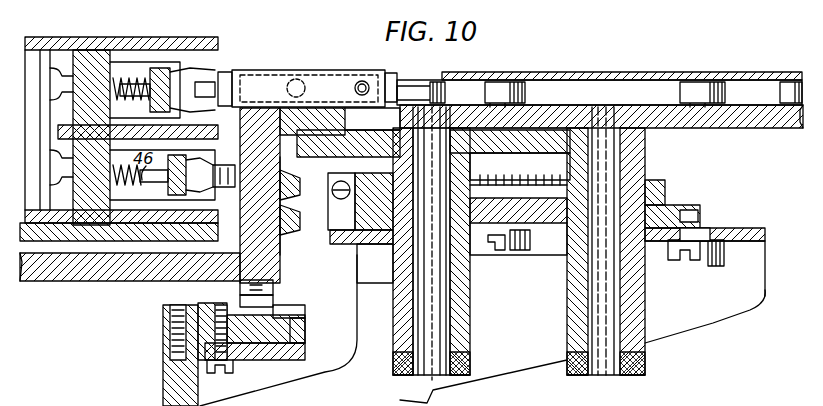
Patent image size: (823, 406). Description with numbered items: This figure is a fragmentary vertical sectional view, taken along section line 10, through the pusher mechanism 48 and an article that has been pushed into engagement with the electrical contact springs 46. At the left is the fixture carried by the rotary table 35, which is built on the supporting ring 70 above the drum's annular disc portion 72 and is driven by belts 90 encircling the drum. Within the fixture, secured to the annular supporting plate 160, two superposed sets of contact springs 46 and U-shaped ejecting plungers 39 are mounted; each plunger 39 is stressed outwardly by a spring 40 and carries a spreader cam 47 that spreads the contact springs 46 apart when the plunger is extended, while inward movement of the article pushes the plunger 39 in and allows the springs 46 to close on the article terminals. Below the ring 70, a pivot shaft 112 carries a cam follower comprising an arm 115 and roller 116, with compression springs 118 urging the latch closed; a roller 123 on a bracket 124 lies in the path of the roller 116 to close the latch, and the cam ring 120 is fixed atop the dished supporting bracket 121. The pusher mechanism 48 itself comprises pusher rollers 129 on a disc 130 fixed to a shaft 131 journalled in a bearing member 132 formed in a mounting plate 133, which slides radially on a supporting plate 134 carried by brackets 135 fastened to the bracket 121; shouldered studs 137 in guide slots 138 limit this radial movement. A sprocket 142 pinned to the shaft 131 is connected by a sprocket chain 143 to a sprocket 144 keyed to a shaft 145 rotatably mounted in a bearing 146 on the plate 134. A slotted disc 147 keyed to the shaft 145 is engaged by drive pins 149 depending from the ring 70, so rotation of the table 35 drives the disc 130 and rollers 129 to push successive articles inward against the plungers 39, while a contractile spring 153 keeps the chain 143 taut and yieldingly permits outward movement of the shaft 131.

The section line 10 is at (33, 0).
The rotary table 35 is at (283, 263).
The ejecting plunger 39 is at (216, 68).
The spring 40 is at (125, 70).
The contact springs 46 is at (158, 70).
The spreader cam 47 is at (172, 78).
The pusher mechanism 48 is at (741, 96).
The supporting ring 70 is at (318, 107).
The disc portion 72 is at (56, 281).
The belts 90 is at (300, 186).
The pivot shafts 112 is at (258, 70).
The arm 115 is at (273, 286).
The roller 116 is at (270, 302).
The compression springs 118 is at (308, 72).
The cam ring 120 is at (232, 362).
The supporting bracket 121 is at (168, 385).
The roller 123 is at (306, 311).
The bracket 124 is at (300, 344).
The pusher rollers 129 is at (420, 82).
The disc 130 is at (543, 110).
The shaft 131 is at (598, 108).
The bearing member 132 is at (645, 300).
The mounting plate 133 is at (665, 212).
The supporting plate 134 is at (738, 228).
The supporting brackets 135 is at (714, 322).
The shouldered studs 137 is at (488, 255).
The guide slots 138 is at (522, 250).
The sprocket 142 is at (667, 188).
The sprocket chain 143 is at (520, 176).
The sprocket 144 is at (478, 188).
The shaft 145 is at (430, 305).
The bearing 146 is at (460, 327).
The disc 147 is at (478, 130).
The drive pins 149 is at (314, 163).
The contractile spring 153 is at (364, 176).
The supporting plate 160 is at (80, 281).